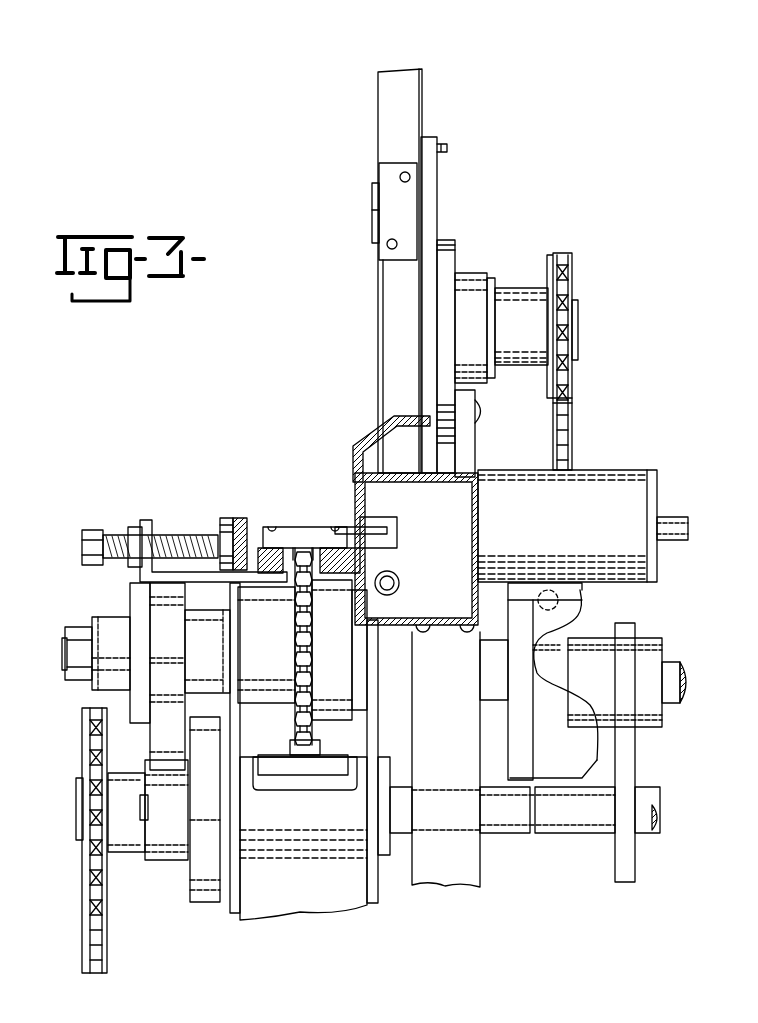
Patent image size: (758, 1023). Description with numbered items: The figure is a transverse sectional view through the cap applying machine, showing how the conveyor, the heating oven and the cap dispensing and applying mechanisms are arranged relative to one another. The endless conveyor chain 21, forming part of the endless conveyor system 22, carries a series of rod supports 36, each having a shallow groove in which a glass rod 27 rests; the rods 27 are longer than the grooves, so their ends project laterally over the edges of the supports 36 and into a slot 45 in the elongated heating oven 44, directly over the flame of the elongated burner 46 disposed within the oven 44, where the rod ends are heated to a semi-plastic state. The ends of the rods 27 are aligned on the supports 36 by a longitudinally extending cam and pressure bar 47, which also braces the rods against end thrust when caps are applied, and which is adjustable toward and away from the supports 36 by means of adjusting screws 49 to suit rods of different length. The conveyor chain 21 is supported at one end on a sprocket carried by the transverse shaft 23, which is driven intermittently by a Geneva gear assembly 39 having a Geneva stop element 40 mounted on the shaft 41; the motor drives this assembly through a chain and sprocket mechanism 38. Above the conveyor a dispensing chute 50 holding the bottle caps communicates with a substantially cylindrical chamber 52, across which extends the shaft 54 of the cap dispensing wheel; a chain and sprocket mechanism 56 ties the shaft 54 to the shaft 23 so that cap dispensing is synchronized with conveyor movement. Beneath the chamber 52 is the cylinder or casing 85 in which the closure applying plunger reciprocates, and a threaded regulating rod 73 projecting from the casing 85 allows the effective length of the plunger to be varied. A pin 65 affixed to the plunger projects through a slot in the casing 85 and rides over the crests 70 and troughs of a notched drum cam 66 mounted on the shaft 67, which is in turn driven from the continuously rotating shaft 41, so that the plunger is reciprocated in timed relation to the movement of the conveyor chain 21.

The dispensing chute 50 is at (410, 72).
The cylindrical chamber 52 is at (392, 363).
The shaft 54 is at (577, 320).
The chain and sprocket mechanism 56 is at (575, 396).
The cylinder or casing 85 is at (612, 470).
The threaded regulating rod 73 is at (670, 518).
The heating oven 44 is at (478, 525).
The rods 27 is at (383, 523).
The burner 46 is at (399, 580).
The slot 45 is at (357, 520).
The rod supports 36 is at (290, 528).
The endless conveyor system 22 is at (303, 548).
The conveyor chain 21 is at (295, 730).
The cam and pressure bar 47 is at (235, 518).
The adjusting screws 49 is at (95, 530).
The transverse shaft 23 is at (62, 649).
The pin 65 is at (570, 622).
The notched drum cam 66 is at (505, 758).
The crests 70 is at (598, 722).
The shaft 67 is at (668, 660).
The shaft 41 is at (642, 795).
The chain and sprocket mechanism 38 is at (88, 858).
The Geneva stop element 40 is at (163, 850).
The Geneva gear assembly 39 is at (170, 865).